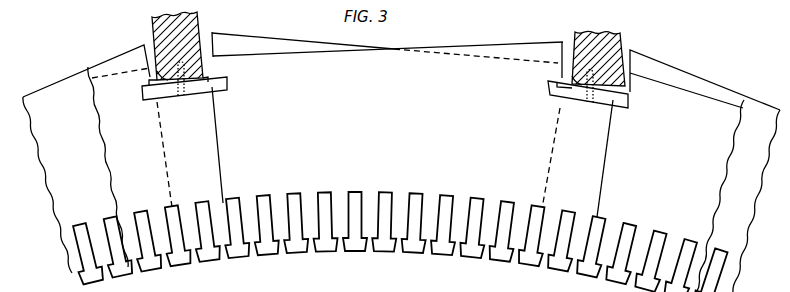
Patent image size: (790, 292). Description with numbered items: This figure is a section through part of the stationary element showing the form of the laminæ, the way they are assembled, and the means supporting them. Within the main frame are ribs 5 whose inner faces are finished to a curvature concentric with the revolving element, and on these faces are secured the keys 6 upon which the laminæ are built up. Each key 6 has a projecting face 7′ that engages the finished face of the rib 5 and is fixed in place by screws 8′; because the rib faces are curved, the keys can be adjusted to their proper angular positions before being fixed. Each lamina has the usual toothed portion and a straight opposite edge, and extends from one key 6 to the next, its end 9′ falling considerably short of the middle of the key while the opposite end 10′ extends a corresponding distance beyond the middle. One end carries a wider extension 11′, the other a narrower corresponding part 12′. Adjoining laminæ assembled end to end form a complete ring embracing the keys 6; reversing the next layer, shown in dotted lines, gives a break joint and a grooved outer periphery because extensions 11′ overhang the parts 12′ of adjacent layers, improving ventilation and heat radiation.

The rib 5 is at (157, 23).
The key 6 is at (165, 93).
The projecting face 7′ is at (173, 79).
The screw 8′ is at (183, 88).
The lamina end 9′ is at (226, 145).
The lamina end 10′ is at (590, 158).
The extension 11′ is at (127, 62).
The corresponding part 12′ is at (220, 68).